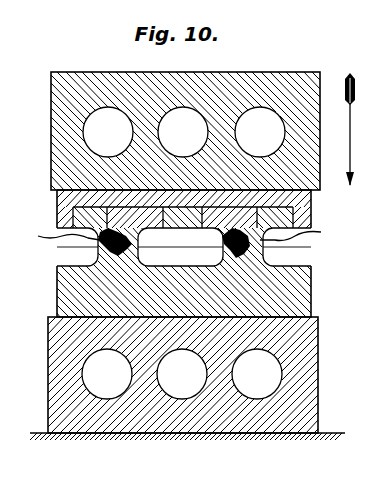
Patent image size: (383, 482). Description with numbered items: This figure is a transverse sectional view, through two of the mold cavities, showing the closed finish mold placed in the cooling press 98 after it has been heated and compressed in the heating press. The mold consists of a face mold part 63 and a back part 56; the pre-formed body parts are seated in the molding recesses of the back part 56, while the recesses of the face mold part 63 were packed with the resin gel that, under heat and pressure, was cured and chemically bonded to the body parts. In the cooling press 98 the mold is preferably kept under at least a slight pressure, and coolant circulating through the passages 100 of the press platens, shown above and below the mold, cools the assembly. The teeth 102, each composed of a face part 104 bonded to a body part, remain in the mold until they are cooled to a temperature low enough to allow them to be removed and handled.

The cooling press 98 is at (280, 72).
The passages 100 is at (260, 111).
The face mold part 63 is at (312, 214).
The teeth 102 is at (70, 241).
The face parts 104 is at (287, 240).
The back part 56 is at (312, 298).